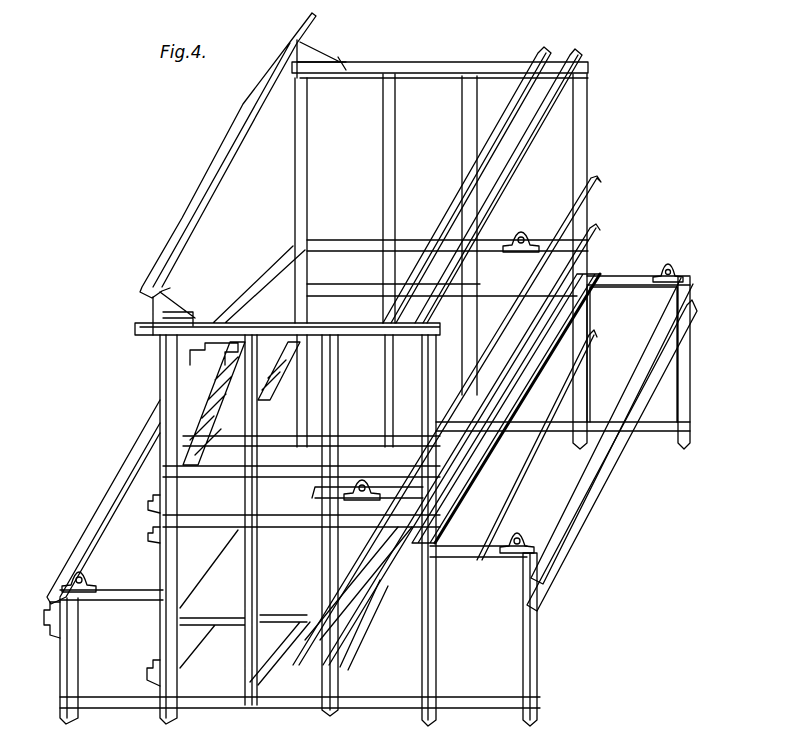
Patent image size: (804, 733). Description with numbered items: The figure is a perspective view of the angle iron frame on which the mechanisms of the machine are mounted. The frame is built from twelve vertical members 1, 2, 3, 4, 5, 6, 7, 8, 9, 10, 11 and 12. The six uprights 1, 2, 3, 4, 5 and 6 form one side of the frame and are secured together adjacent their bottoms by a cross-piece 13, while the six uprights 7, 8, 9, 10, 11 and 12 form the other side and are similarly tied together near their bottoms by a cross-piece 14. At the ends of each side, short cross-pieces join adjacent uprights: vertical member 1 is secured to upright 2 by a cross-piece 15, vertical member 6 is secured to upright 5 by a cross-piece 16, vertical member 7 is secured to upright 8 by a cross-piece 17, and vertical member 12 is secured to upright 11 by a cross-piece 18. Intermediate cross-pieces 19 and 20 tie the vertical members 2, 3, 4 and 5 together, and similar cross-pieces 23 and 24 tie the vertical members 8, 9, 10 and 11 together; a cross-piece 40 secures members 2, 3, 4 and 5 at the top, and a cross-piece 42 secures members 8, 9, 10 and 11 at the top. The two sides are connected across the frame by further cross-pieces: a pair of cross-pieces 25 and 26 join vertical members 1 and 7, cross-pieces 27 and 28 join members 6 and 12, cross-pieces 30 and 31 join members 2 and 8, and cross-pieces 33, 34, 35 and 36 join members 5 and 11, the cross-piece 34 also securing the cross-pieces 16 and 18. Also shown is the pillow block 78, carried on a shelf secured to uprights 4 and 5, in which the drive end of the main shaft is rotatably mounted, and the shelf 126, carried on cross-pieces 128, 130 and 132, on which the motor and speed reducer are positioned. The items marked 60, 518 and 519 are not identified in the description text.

The vertical member 1 is at (74, 650).
The vertical member 2 is at (177, 670).
The vertical member 3 is at (244, 592).
The vertical member 4 is at (330, 681).
The vertical member 5 is at (437, 663).
The vertical member 6 is at (536, 666).
The vertical member 7 is at (205, 367).
The vertical member 8 is at (298, 176).
The vertical member 9 is at (384, 172).
The vertical member 10 is at (462, 163).
The vertical member 11 is at (586, 160).
The vertical member 12 is at (688, 376).
The cross-piece 13 is at (362, 700).
The cross-piece 14 is at (651, 432).
The cross-piece 15 is at (127, 596).
The cross-piece 16 is at (487, 551).
The cross-piece 17 is at (291, 352).
The cross-piece 18 is at (638, 278).
The cross-piece 19 is at (206, 516).
The cross-piece 20 is at (227, 462).
The cross-piece 23 is at (352, 295).
The cross-piece 24 is at (354, 249).
The cross-piece 25 is at (52, 620).
The cross-piece 26 is at (99, 513).
The cross-piece 27 is at (568, 535).
The cross-piece 28 is at (578, 490).
The cross-piece 30 is at (156, 532).
The cross-piece 31 is at (156, 502).
The cross-piece 33 is at (527, 455).
The cross-piece 34 is at (487, 458).
The cross-piece 35 is at (585, 239).
The cross-piece 36 is at (497, 347).
The cross-piece 40 is at (222, 329).
The cross-piece 42 is at (437, 66).
The short beam 60 is at (322, 492).
The pillow block 78 is at (362, 482).
The shelf 126 is at (383, 572).
The cross-piece 128 is at (155, 661).
The cross-piece 130 is at (282, 658).
The cross-piece 132 is at (355, 637).
The corner bracket 518 is at (176, 304).
The corner bracket 519 is at (317, 50).